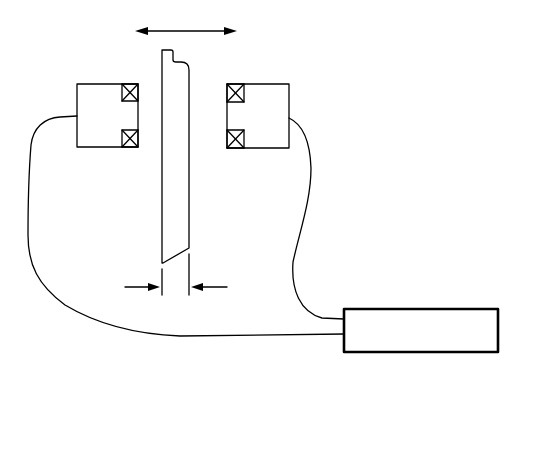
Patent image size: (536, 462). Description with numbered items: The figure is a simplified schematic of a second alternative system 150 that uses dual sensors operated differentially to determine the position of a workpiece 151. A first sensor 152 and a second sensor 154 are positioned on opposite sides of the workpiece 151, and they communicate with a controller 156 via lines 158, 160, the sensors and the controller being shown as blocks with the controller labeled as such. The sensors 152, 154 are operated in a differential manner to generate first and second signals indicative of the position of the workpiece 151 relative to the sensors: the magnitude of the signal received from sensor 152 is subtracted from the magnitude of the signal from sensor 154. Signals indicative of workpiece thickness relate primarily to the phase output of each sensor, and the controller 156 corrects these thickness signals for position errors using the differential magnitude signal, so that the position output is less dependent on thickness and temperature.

The second alternative system 150 is at (394, 224).
The workpiece 151 is at (162, 185).
The sensor 152 is at (265, 84).
The sensor 154 is at (96, 83).
The controller 156 is at (406, 309).
The line 158 is at (97, 318).
The line 160 is at (311, 202).